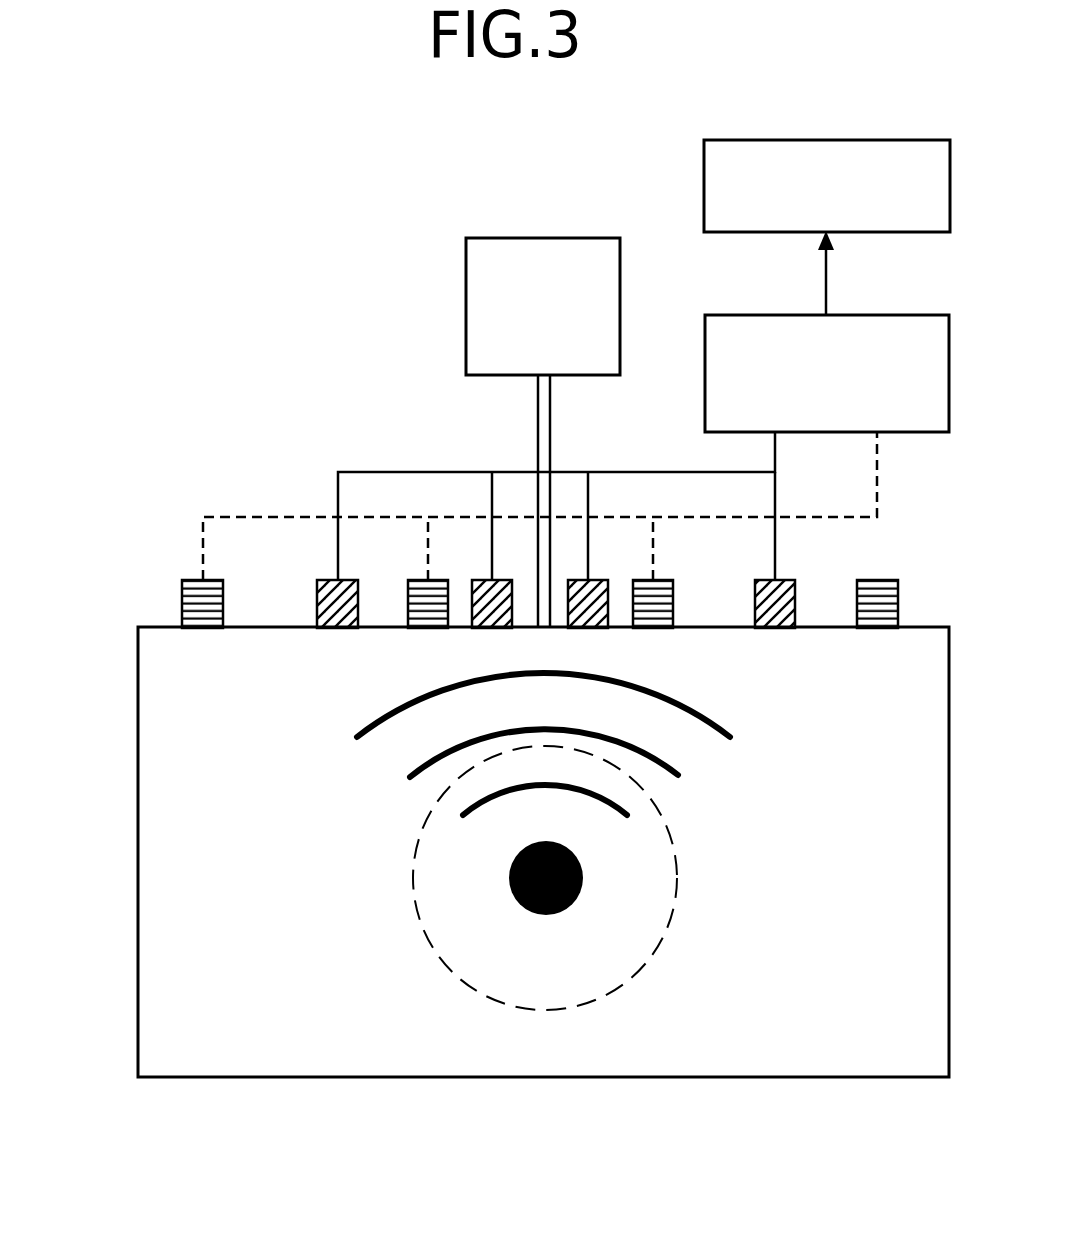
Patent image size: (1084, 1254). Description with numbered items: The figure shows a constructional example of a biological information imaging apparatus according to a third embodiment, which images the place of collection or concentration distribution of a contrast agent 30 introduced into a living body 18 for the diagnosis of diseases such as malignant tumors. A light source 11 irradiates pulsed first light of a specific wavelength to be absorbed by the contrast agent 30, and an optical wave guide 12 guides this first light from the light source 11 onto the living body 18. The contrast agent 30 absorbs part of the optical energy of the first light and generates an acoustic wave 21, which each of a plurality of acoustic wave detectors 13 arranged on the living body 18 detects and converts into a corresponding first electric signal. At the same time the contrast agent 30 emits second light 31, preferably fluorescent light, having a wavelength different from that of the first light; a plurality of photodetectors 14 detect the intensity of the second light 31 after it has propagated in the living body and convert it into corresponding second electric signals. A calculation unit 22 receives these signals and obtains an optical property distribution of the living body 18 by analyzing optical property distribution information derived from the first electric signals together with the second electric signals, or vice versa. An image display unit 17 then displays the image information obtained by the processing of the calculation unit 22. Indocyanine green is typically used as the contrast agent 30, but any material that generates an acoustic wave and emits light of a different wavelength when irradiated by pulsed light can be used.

The light source 11 is at (577, 238).
The optical wave guide 12 is at (535, 417).
The acoustic wave detectors 13 is at (330, 580).
The photodetectors 14 is at (190, 580).
The image display unit 17 is at (752, 140).
The living body 18 is at (118, 627).
The acoustic wave 21 is at (700, 708).
The calculation unit 22 is at (748, 315).
The contrast agent 30 is at (523, 910).
The second light 31 is at (645, 958).